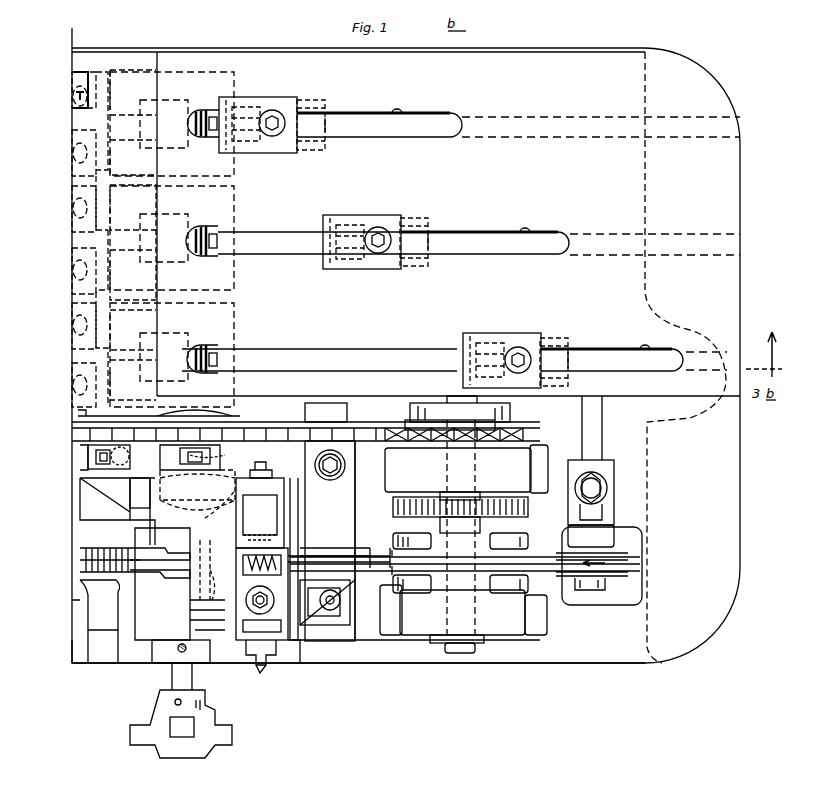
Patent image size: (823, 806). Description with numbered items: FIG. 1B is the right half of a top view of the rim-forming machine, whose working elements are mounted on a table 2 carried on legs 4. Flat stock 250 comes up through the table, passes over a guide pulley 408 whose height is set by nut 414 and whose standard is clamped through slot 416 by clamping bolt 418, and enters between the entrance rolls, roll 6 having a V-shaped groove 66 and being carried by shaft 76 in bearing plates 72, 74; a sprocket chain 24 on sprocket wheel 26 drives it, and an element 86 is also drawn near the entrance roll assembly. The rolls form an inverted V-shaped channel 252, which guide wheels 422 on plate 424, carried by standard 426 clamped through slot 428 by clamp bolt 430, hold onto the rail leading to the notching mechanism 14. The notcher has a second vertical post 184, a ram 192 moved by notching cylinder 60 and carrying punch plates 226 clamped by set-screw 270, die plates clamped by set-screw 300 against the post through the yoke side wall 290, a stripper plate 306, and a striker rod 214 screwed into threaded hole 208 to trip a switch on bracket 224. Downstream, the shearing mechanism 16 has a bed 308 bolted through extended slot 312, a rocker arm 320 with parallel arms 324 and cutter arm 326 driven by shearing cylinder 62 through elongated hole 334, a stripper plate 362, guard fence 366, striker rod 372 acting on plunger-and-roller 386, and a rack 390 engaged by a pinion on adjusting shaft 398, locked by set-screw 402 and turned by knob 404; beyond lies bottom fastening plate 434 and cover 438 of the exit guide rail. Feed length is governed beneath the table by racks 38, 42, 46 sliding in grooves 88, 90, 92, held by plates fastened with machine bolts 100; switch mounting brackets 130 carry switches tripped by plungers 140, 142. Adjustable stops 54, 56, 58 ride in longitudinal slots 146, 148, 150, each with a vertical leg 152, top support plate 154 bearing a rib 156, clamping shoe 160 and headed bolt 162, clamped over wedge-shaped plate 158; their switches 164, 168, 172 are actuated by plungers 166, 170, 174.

The table 2 is at (730, 515).
The legs 4 is at (655, 660).
The entrance roll 6 is at (532, 555).
The notching mechanism 14 is at (294, 658).
The shearing mechanism 16 is at (134, 655).
The sprocket chain 24 is at (404, 426).
The sprocket wheel 26 is at (505, 412).
The rack 38 is at (207, 137).
The rack 42 is at (207, 256).
The rack 46 is at (200, 345).
The adjustable stop 54 is at (291, 92).
The adjustable stop 56 is at (386, 210).
The adjustable stop 58 is at (526, 321).
The notching cylinder 60 is at (205, 581).
The shearing cylinder 62 is at (200, 510).
The V-shaped groove 66 is at (532, 567).
The bearing plate 72 is at (440, 470).
The bearing plate 74 is at (440, 619).
The shaft 76 is at (460, 656).
The gear 86 is at (530, 506).
The groove 88 is at (420, 137).
The groove 90 is at (546, 254).
The groove 92 is at (650, 371).
The machine bolts 100 is at (74, 96).
The switch mounting bracket 130 is at (233, 84).
The plunger 140 is at (210, 110).
The plunger 142 is at (216, 226).
The longitudinal slot 146 is at (408, 113).
The longitudinal slot 148 is at (536, 228).
The longitudinal slot 150 is at (644, 348).
The vertical leg 152 is at (316, 97).
The top support plate 154 is at (320, 150).
The rib 156 is at (326, 125).
The wedge-shaped plate 158 is at (730, 185).
The clamping shoe 160 is at (280, 153).
The headed bolt 162 is at (272, 110).
The switch 164 is at (326, 110).
The switch plunger 166 is at (246, 153).
The switch 168 is at (424, 224).
The plunger 170 is at (322, 243).
The switch 172 is at (568, 342).
The plunger 174 is at (462, 363).
The second vertical post 184 is at (260, 517).
The ram 192 is at (240, 660).
The threaded hole 208 is at (325, 608).
The striker rod 214 is at (336, 590).
The bracket 224 is at (318, 638).
The plates 226 is at (290, 552).
The flat stock 250 is at (630, 566).
The inverted V-shaped channel 252 is at (372, 555).
The set-screw 270 is at (258, 675).
The side wall 290 is at (282, 488).
The set-screw 300 is at (268, 475).
The stripper plate 306 is at (272, 531).
The bed 308 is at (170, 609).
The extended slot 312 is at (80, 584).
The rocker arm 320 is at (150, 520).
The parallel arms 324 is at (226, 449).
The cutter arm 326 is at (226, 562).
The elongated hole 334 is at (80, 418).
The stripper plate 362 is at (225, 548).
The guard fence 366 is at (200, 622).
The striker rod 372 is at (80, 466).
The plunger-and-roller 386 is at (88, 455).
The rack 390 is at (80, 548).
The adjusting shaft 398 is at (192, 672).
The set-screw 402 is at (176, 652).
The knob 404 is at (145, 728).
The guide pulley 408 is at (608, 580).
The nut 414 is at (605, 512).
The slot 416 is at (600, 440).
The clamping bolt 418 is at (605, 486).
The guide wheels 422 is at (388, 560).
The plate 424 is at (355, 548).
The standard 426 is at (345, 520).
The slot 428 is at (320, 402).
The clamp bolt 430 is at (345, 465).
The bottom fastening plate 434 is at (180, 572).
The cover 438 is at (148, 560).